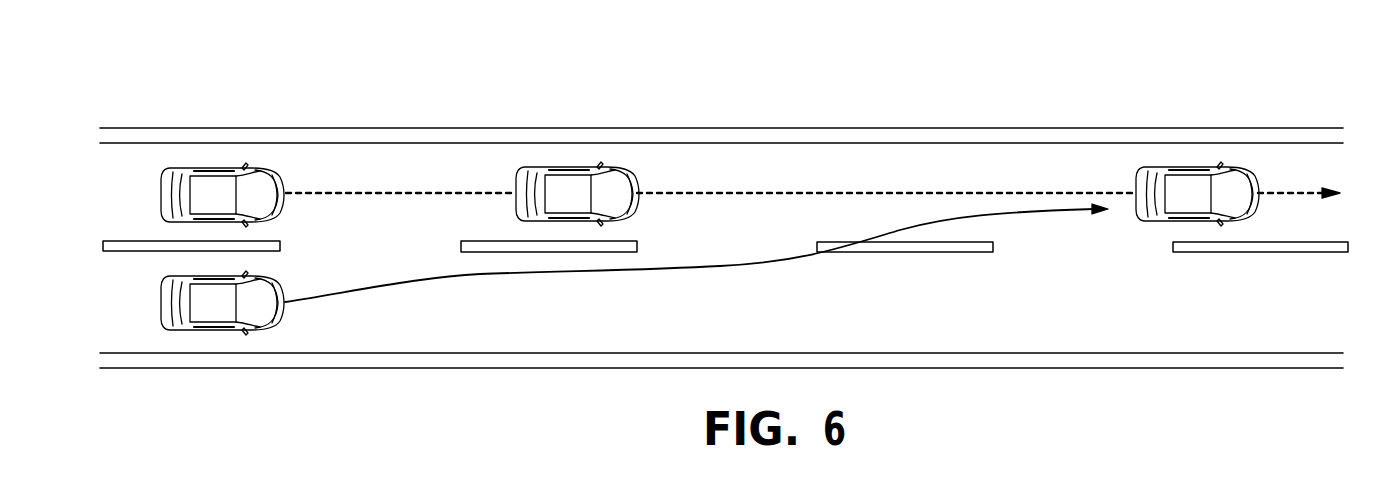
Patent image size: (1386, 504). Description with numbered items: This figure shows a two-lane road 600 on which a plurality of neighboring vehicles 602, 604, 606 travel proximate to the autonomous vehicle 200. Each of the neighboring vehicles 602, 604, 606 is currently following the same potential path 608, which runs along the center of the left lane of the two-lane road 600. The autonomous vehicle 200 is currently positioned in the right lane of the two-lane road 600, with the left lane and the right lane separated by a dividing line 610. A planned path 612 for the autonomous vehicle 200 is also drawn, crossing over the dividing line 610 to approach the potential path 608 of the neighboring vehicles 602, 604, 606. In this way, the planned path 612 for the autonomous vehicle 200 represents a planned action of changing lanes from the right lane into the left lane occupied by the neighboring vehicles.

The two-lane road 600 is at (1060, 104).
The neighboring vehicle 602 is at (259, 167).
The neighboring vehicle 604 is at (627, 166).
The neighboring vehicle 606 is at (1232, 166).
The potential path 608 is at (1292, 193).
The dividing line 610 is at (903, 253).
The planned path 612 is at (1028, 212).
The autonomous vehicle 200 is at (248, 330).